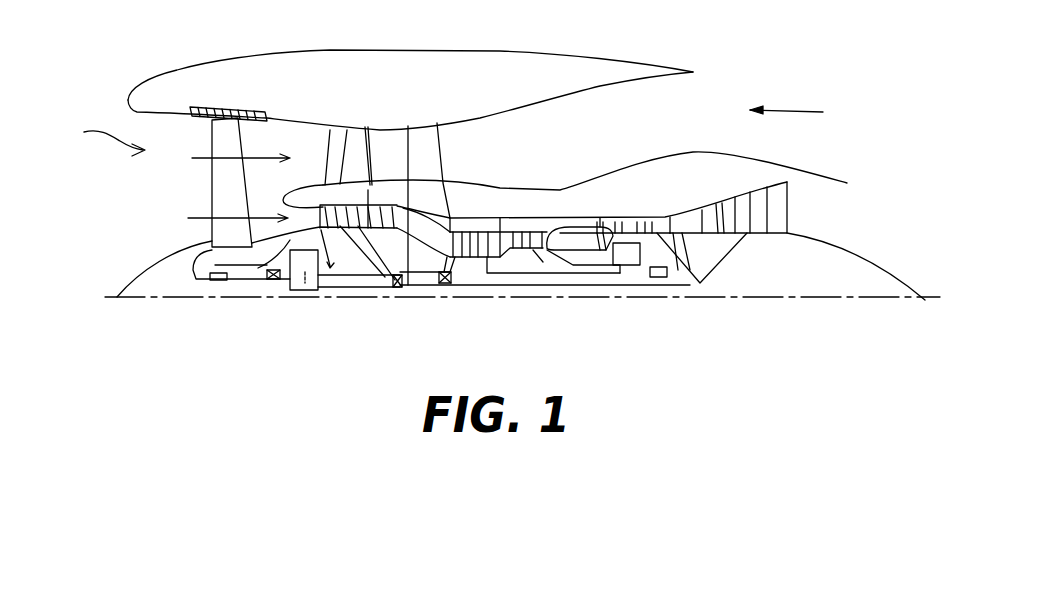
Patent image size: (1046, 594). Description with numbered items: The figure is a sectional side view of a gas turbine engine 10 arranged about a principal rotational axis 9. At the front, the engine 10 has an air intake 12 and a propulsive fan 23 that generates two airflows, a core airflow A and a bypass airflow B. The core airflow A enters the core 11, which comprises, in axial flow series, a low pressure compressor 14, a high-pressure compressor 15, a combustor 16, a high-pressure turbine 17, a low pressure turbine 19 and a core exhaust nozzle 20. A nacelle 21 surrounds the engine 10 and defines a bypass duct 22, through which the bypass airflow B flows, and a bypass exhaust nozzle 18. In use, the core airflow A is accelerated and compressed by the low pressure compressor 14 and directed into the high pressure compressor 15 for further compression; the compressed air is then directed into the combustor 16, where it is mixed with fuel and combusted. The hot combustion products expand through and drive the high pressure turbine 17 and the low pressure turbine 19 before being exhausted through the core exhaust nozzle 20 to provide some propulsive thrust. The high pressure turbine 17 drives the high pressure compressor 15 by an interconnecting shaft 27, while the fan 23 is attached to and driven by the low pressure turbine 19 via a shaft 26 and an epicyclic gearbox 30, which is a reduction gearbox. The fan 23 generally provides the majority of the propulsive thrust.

The principal rotational axis 9 is at (750, 300).
The gas turbine engine 10 is at (496, 182).
The core 11 is at (622, 223).
The air intake 12 is at (98, 137).
The low pressure compressor 14 is at (367, 128).
The high-pressure compressor 15 is at (500, 217).
The combustor 16 is at (575, 245).
The high-pressure turbine 17 is at (633, 221).
The bypass exhaust nozzle 18 is at (803, 112).
The low pressure turbine 19 is at (758, 197).
The core exhaust nozzle 20 is at (822, 217).
The nacelle 21 is at (190, 65).
The bypass duct 22 is at (647, 124).
The propulsive fan 23 is at (212, 187).
The shaft 26 is at (508, 274).
The interconnecting shaft 27 is at (540, 274).
The epicyclic gearbox 30 is at (303, 297).